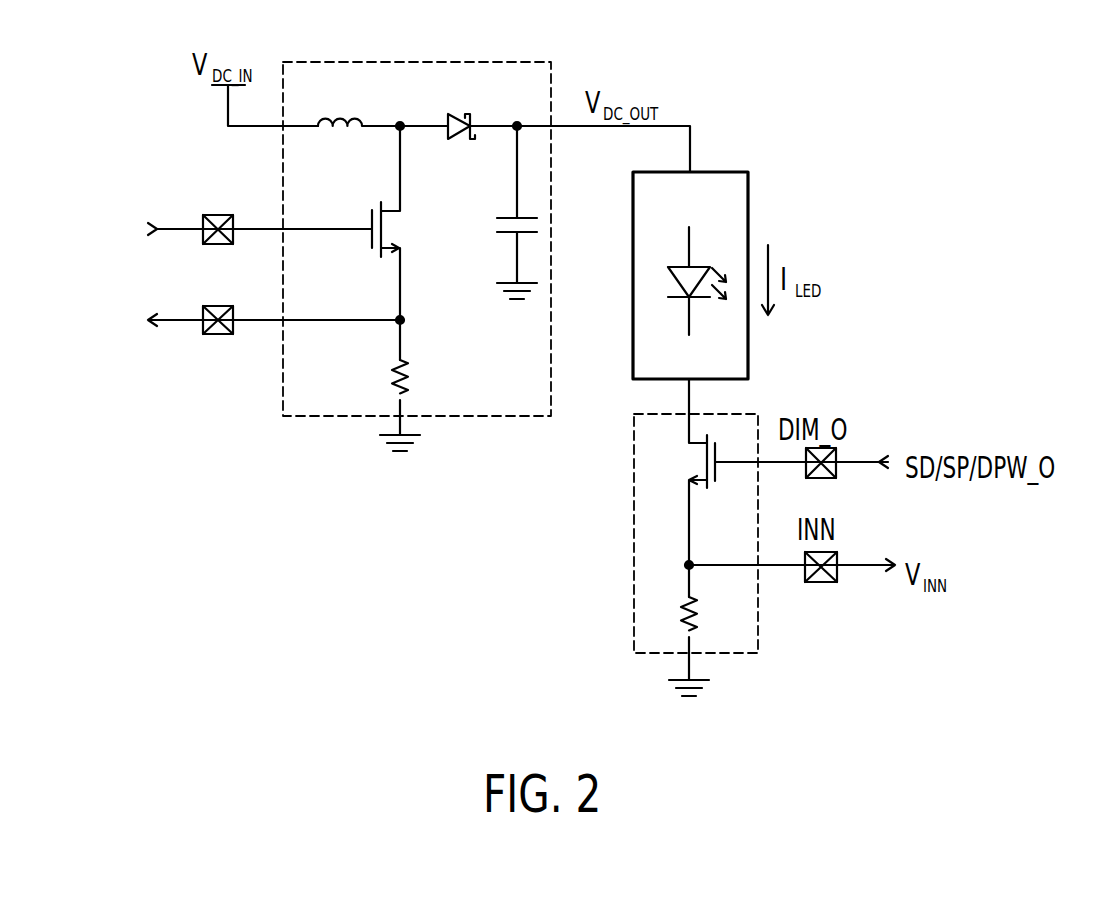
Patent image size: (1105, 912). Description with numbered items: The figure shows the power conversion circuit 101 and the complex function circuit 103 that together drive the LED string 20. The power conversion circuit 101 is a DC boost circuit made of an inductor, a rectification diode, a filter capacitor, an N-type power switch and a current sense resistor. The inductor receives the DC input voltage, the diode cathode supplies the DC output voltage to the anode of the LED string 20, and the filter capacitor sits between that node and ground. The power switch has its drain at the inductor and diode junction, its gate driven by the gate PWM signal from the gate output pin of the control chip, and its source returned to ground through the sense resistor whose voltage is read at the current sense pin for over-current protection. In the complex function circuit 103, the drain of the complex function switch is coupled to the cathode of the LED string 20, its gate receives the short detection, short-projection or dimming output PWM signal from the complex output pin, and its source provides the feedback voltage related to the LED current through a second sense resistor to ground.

The power conversion circuit 101 is at (481, 62).
The LED string 20 is at (748, 196).
The complex function circuit 103 is at (634, 528).